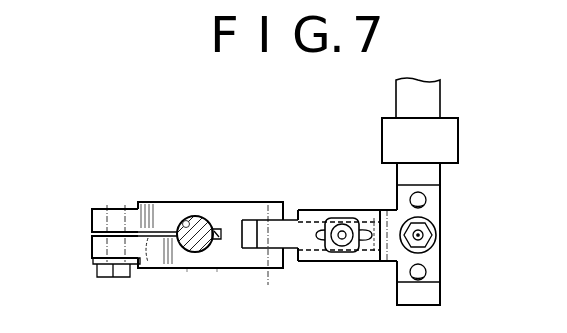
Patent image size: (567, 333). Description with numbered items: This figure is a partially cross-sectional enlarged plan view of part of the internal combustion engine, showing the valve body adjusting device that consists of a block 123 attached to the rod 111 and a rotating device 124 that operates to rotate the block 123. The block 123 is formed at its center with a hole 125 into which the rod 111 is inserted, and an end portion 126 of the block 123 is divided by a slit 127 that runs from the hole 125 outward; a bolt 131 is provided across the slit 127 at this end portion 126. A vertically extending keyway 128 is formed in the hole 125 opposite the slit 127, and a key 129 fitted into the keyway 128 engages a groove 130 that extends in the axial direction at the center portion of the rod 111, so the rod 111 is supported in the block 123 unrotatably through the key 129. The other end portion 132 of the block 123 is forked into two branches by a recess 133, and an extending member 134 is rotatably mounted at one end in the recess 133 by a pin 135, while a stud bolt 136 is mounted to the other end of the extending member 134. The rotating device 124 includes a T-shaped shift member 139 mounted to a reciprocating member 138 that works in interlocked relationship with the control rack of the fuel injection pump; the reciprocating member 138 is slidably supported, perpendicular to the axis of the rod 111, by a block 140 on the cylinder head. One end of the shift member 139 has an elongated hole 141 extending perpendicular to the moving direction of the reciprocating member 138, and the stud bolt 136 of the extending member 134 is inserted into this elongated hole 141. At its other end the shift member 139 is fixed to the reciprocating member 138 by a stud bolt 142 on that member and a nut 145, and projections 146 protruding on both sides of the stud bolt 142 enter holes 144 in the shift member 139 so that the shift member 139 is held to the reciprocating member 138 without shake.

The rod 111 is at (187, 272).
The block 123 is at (138, 200).
The rotating device 124 is at (442, 206).
The hole 125 is at (185, 215).
The end portion 126 is at (91, 223).
The slit 127 is at (147, 272).
The keyway 128 is at (217, 272).
The key 129 is at (223, 228).
The groove 130 is at (213, 222).
The bolt 131 is at (97, 273).
The other end portion 132 is at (287, 268).
The recess 133 is at (258, 220).
The extending member 134 is at (298, 222).
The pin 135 is at (262, 272).
The stud bolt 136 is at (342, 268).
The reciprocating member 138 is at (433, 98).
The shift member 139 is at (377, 263).
The block 140 is at (455, 136).
The elongated hole 141 is at (368, 209).
The stud bolt 142 is at (436, 250).
The holes 144 is at (440, 172).
The nut 145 is at (432, 237).
The projections 146 is at (428, 200).